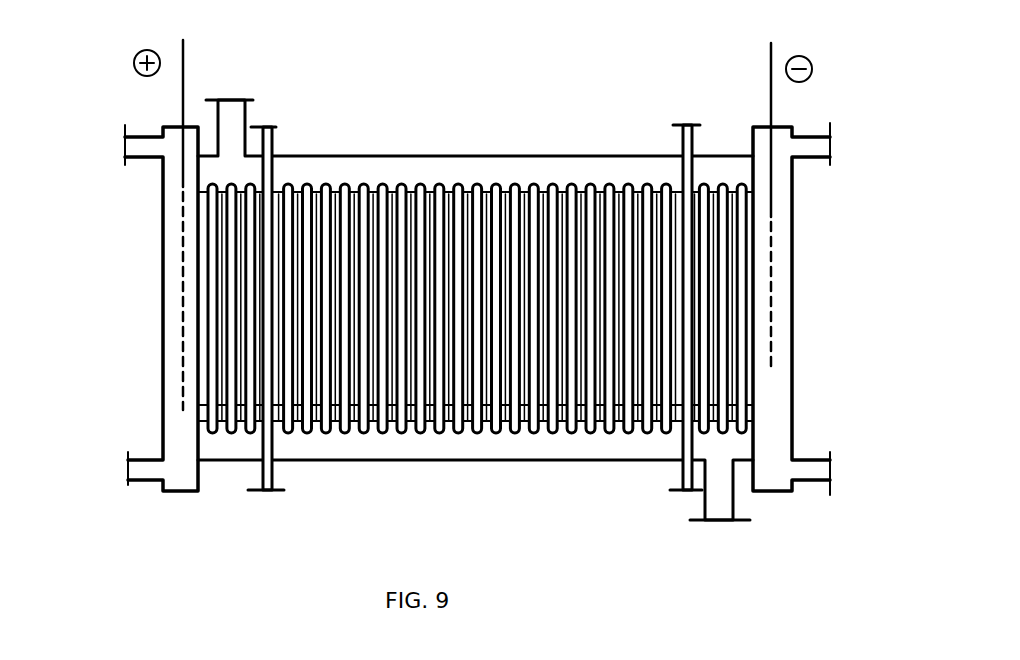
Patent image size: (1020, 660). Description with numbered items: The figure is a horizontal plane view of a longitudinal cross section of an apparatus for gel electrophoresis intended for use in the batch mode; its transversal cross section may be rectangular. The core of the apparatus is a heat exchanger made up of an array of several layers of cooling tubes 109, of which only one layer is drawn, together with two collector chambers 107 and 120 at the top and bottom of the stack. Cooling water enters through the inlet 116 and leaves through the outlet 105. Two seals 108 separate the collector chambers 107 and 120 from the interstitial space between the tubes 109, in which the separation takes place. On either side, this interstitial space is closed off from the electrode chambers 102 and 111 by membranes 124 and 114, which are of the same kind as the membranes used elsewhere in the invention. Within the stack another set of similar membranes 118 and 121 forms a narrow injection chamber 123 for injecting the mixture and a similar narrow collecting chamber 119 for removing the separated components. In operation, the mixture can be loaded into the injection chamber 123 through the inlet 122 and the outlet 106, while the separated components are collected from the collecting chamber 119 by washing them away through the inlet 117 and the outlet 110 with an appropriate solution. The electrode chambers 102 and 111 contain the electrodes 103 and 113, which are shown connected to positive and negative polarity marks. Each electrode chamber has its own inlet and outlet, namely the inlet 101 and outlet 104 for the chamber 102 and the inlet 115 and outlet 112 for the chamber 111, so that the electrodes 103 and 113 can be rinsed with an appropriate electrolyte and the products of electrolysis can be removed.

The inlet 101 is at (145, 478).
The electrode chamber 102 is at (178, 438).
The electrode 103 is at (183, 325).
The outlet 104 is at (143, 159).
The outlet 105 is at (235, 122).
The outlet 106 is at (272, 143).
The collector chamber 107 is at (380, 147).
The seals 108 is at (441, 189).
The cooling tubes 109 is at (557, 184).
The outlet 110 is at (680, 145).
The electrode chamber 111 is at (768, 127).
The outlet 112 is at (808, 146).
The electrode 113 is at (772, 250).
The membrane 114 is at (745, 346).
The inlet 115 is at (805, 474).
The inlet 116 is at (723, 505).
The inlet 117 is at (680, 473).
The membrane 118 is at (673, 394).
The collecting chamber 119 is at (683, 298).
The collector chamber 120 is at (472, 462).
The membrane 121 is at (142, 264).
The inlet 122 is at (277, 481).
The injection chamber 123 is at (266, 243).
The membrane 124 is at (197, 392).